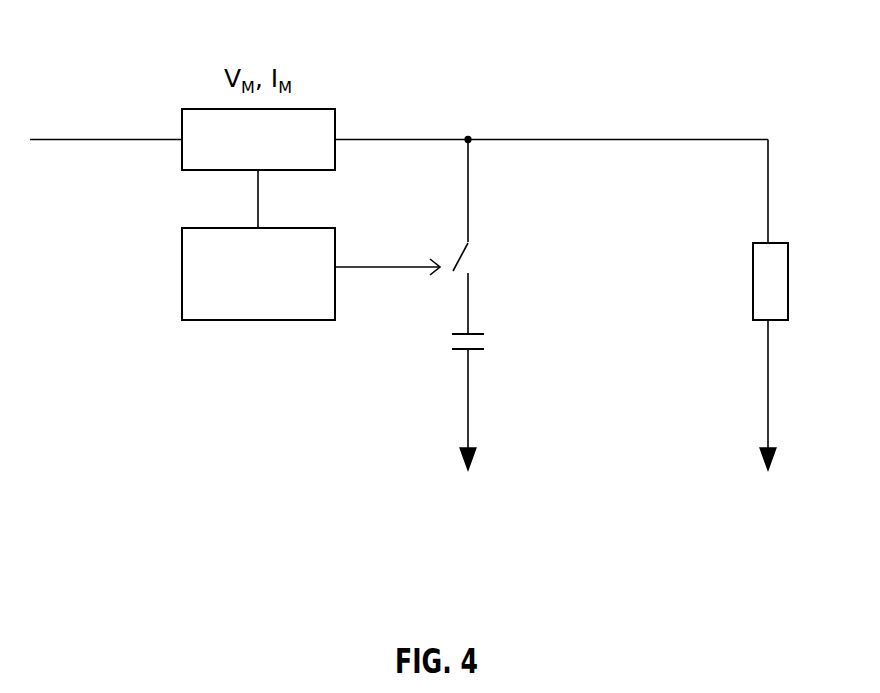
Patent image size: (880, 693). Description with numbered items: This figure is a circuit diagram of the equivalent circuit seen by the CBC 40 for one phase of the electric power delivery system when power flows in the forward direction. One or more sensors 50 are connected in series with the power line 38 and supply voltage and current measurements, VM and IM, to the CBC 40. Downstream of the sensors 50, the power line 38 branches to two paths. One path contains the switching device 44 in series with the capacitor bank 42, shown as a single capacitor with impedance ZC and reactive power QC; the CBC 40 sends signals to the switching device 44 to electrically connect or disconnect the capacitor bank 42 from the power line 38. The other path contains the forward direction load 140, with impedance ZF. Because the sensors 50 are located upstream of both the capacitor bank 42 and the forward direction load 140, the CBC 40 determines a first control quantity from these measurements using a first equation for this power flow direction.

The sensors 50 is at (182, 118).
The CBC 40 is at (182, 296).
The power line 38 is at (380, 139).
The switching device 44 is at (463, 255).
The capacitor bank 42 is at (480, 333).
The forward direction load 140 is at (789, 273).